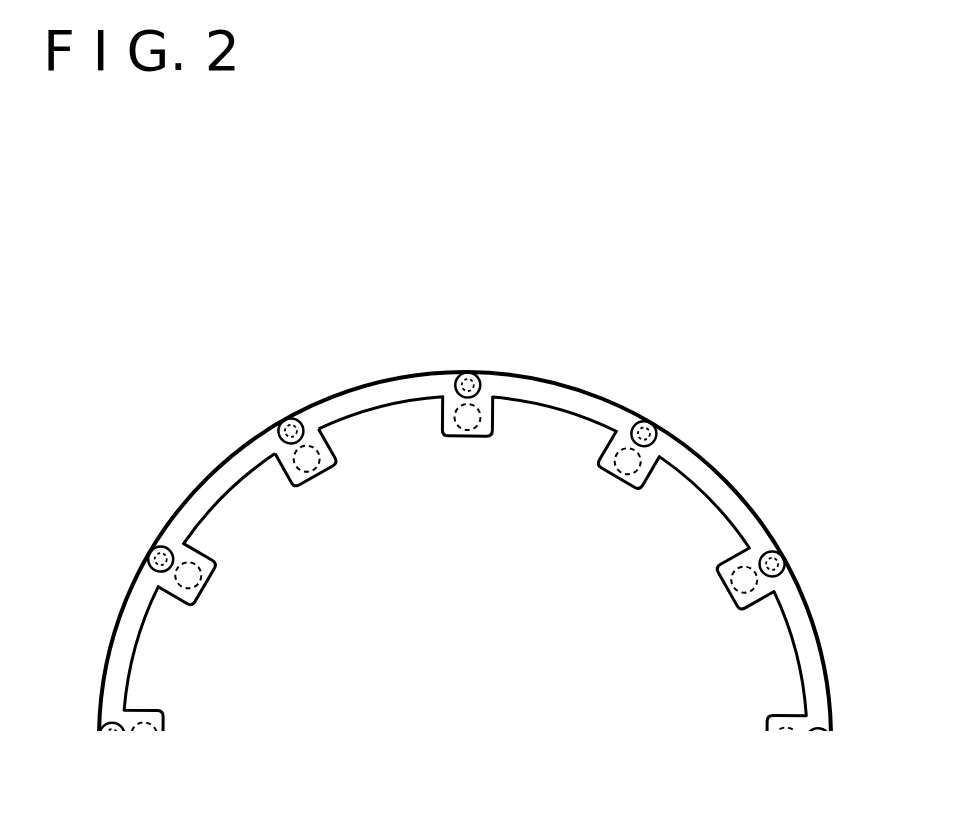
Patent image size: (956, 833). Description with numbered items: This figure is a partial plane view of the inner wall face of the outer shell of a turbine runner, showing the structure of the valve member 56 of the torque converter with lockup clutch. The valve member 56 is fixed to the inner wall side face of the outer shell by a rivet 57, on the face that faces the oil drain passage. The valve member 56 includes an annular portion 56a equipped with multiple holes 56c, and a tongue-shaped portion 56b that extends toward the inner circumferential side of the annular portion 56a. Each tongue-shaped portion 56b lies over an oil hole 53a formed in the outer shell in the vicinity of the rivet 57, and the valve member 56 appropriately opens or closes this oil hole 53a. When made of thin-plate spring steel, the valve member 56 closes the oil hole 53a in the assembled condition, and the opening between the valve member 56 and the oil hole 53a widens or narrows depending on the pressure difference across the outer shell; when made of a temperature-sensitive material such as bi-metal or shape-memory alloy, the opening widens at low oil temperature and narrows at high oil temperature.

The valve member 56 is at (466, 544).
The annular portion 56a is at (206, 493).
The tongue-shaped portion 56b is at (328, 468).
The hole 56c is at (291, 419).
The rivet 57 is at (277, 438).
The oil hole 53a is at (308, 468).